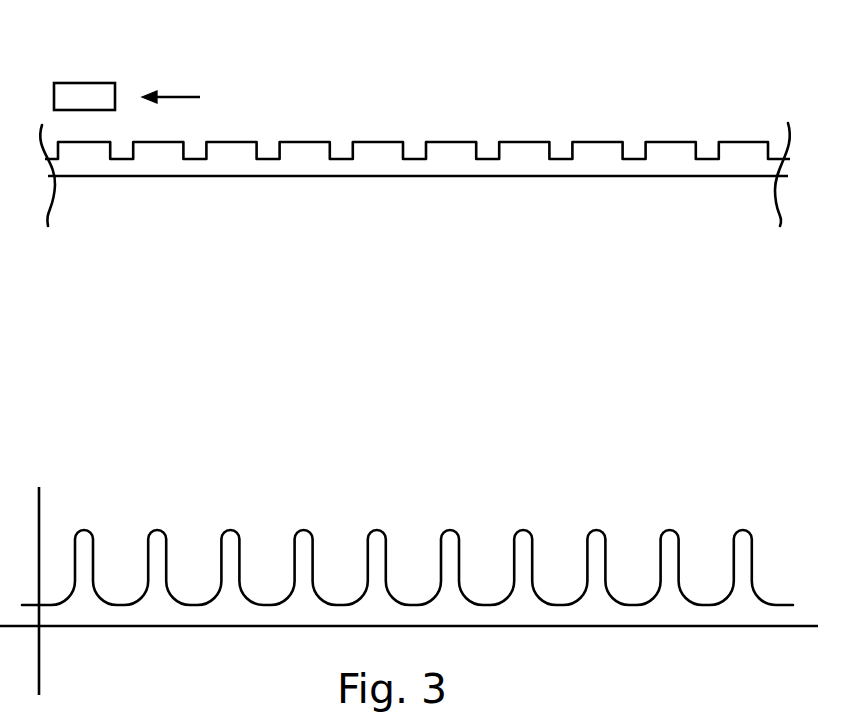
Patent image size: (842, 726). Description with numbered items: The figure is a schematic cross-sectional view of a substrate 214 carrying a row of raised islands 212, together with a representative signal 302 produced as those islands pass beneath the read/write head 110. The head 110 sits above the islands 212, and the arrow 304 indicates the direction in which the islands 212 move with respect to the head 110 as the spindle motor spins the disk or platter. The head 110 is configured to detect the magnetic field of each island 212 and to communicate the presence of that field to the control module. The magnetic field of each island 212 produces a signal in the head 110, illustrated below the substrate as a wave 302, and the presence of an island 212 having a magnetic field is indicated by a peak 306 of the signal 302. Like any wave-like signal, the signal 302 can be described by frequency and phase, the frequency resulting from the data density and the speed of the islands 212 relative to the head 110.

The read/write head 110 is at (80, 83).
The arrow 304 is at (177, 97).
The islands 212 is at (309, 142).
The substrate 214 is at (315, 177).
The signal 302 is at (612, 419).
The peak 306 is at (89, 530).